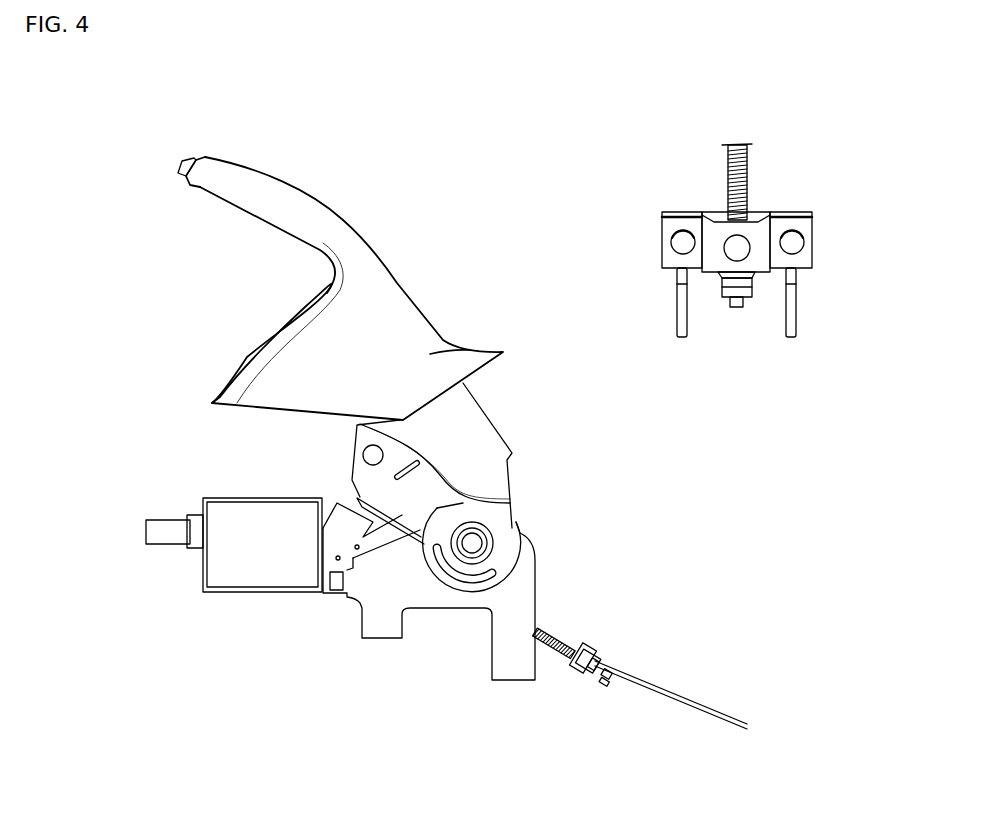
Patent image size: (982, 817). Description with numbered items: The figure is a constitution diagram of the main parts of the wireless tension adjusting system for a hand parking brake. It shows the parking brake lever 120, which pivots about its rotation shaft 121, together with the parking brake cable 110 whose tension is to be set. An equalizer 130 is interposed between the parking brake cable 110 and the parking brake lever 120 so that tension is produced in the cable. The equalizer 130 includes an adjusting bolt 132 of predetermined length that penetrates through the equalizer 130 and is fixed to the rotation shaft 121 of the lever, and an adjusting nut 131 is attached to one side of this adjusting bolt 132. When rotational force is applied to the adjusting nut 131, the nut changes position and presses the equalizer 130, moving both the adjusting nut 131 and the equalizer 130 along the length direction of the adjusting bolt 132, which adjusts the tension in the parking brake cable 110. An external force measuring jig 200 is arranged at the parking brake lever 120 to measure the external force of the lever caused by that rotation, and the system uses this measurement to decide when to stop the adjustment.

The parking brake cable 110 is at (642, 680).
The parking brake lever 120 is at (302, 203).
The rotation shaft 121 is at (472, 543).
The equalizer 130 is at (588, 650).
The adjusting nut 131 is at (747, 297).
The adjusting bolt 132 is at (747, 159).
The external force measuring jig 200 is at (245, 505).